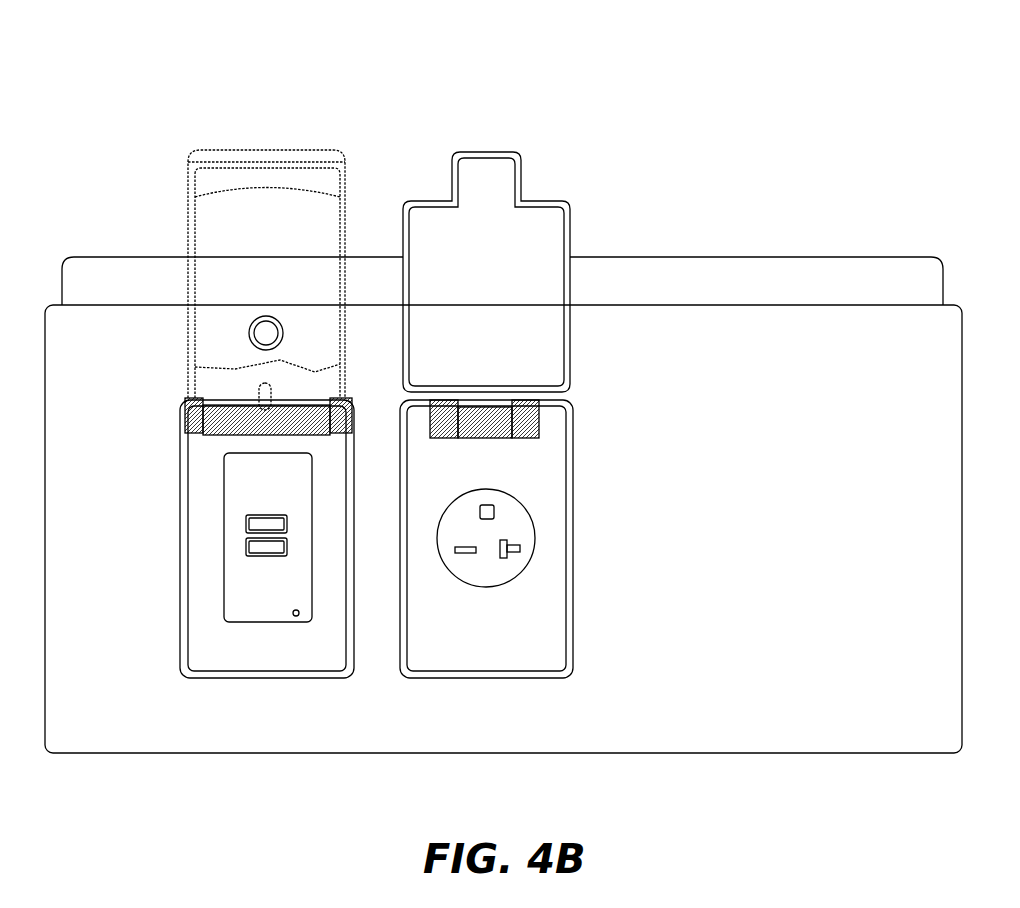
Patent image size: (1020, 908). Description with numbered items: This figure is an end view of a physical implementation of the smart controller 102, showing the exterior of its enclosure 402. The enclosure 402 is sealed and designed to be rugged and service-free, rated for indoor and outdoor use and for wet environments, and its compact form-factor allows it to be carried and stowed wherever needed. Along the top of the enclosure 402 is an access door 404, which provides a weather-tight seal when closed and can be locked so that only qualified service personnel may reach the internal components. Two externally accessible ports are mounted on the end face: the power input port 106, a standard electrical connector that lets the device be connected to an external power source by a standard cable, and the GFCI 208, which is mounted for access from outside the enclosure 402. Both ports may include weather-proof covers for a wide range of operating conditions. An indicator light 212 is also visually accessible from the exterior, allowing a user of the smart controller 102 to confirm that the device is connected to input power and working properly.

The smart controller 102 is at (96, 78).
The power input port 106 is at (500, 530).
The GFCI 208 is at (232, 542).
The indicator light 212 is at (262, 334).
The enclosure 402 is at (758, 556).
The access door 404 is at (803, 272).